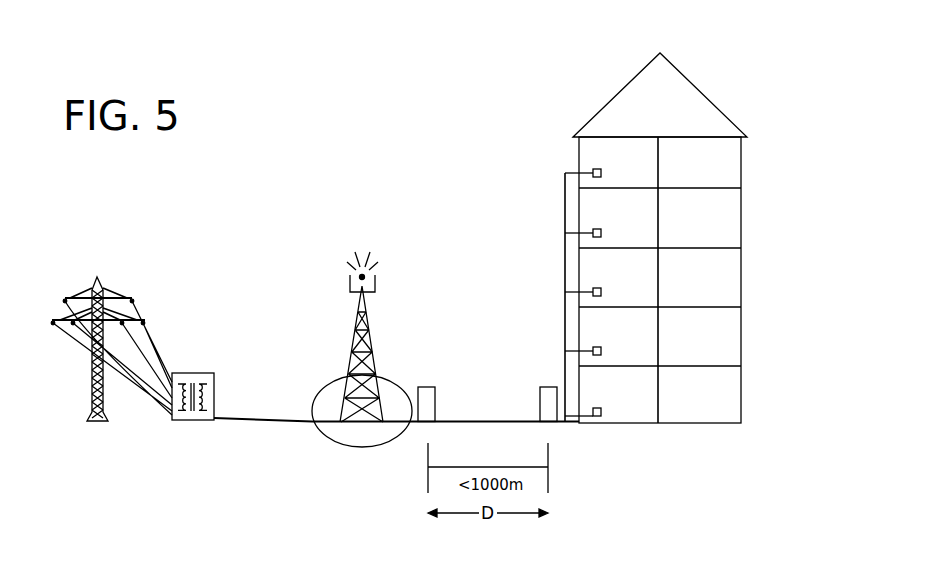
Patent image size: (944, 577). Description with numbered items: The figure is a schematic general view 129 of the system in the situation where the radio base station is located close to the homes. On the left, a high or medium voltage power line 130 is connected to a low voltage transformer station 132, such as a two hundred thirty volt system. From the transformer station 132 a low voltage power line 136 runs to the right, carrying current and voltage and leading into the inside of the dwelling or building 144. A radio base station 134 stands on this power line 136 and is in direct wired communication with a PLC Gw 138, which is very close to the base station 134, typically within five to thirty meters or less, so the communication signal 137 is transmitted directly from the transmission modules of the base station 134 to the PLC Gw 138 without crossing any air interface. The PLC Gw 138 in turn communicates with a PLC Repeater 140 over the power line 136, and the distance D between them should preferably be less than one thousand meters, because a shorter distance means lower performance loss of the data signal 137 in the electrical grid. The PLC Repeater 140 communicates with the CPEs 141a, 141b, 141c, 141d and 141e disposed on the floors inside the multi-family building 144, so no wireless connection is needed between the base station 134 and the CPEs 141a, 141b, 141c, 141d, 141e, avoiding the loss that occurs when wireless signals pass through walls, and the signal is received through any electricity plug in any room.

The general view 129 is at (259, 173).
The high or medium voltage power line 130 is at (88, 292).
The low voltage transformer station 132 is at (193, 371).
The radio base station 134 is at (353, 325).
The power line 136 is at (402, 425).
The communication signal 137 is at (470, 418).
The PLC Gw 138 is at (425, 386).
The PLC Repeater 140 is at (543, 386).
The CPE 141a is at (593, 172).
The CPE 141b is at (593, 232).
The CPE 141c is at (593, 291).
The CPE 141d is at (593, 350).
The CPE 141e is at (598, 420).
The building 144 is at (743, 167).